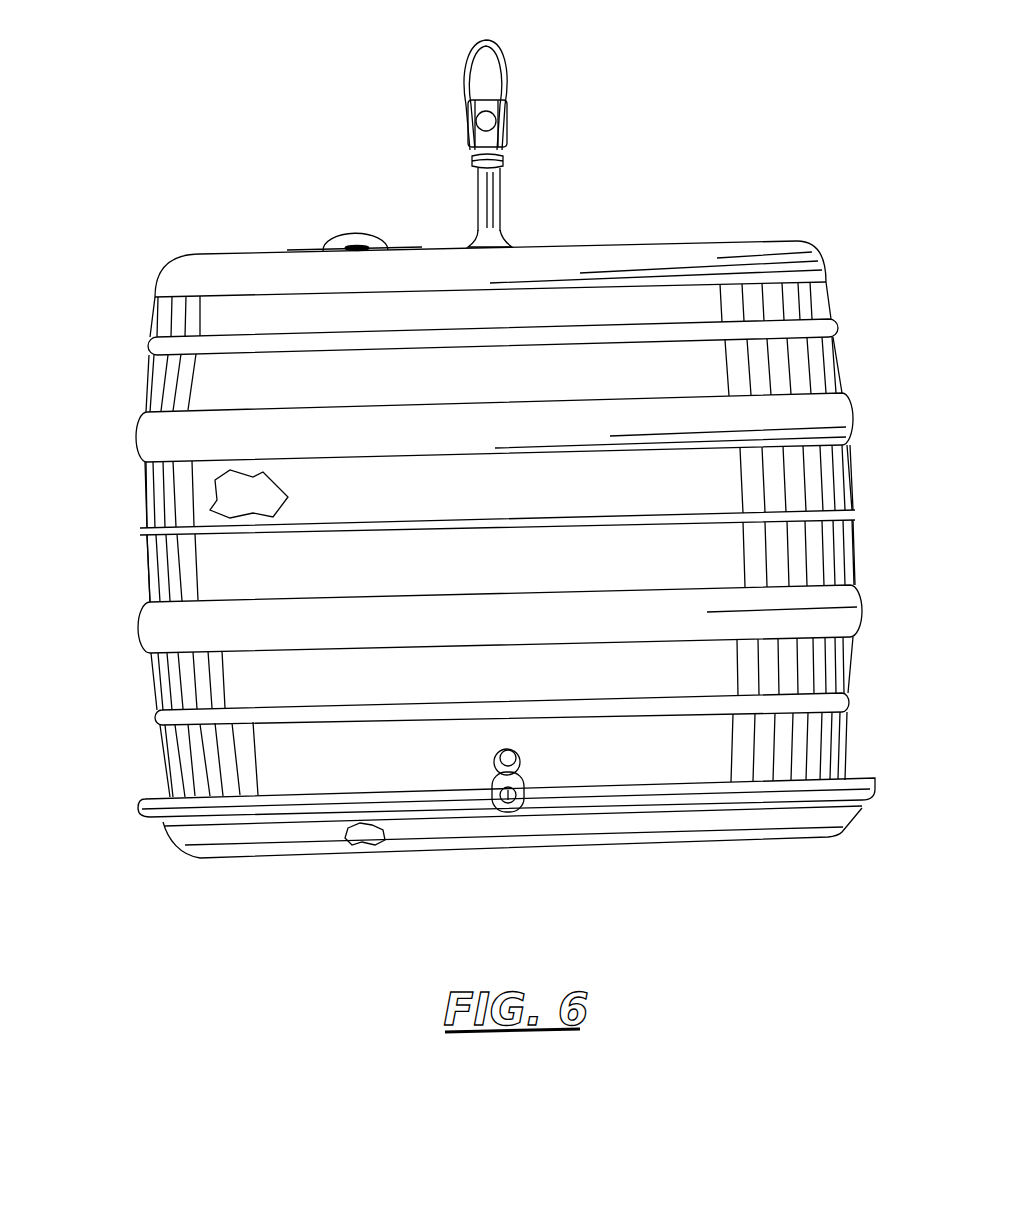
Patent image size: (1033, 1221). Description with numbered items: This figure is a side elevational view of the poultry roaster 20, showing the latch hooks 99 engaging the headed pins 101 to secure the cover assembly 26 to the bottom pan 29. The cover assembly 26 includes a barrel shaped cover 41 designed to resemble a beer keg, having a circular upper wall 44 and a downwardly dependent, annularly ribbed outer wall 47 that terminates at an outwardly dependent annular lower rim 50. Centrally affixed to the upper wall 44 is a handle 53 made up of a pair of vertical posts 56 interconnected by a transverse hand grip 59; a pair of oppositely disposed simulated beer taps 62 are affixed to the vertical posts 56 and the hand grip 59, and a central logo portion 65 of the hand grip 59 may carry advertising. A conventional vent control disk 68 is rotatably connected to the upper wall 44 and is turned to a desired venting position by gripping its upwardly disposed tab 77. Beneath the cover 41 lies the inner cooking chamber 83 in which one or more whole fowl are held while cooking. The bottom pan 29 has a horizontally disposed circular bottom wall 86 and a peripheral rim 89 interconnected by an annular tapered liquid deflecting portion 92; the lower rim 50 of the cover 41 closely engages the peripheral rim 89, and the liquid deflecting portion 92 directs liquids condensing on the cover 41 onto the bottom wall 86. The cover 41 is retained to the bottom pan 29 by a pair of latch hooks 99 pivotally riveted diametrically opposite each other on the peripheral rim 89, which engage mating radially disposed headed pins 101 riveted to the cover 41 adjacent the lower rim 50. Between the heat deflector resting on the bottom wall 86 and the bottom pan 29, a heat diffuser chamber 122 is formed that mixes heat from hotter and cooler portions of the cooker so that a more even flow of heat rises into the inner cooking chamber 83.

The poultry roaster 20 is at (848, 233).
The cover assembly 26 is at (147, 322).
The bottom pan 29 is at (396, 860).
The cover 41 is at (820, 300).
The upper wall 44 is at (740, 246).
The outer wall 47 is at (218, 566).
The lower rim 50 is at (717, 787).
The handle 53 is at (516, 52).
The vertical posts 56 is at (496, 194).
The hand grip 59 is at (516, 117).
The simulated beer taps 62 is at (478, 84).
The central logo portion 65 is at (477, 126).
The vent control disk 68 is at (297, 250).
The tab 77 is at (352, 240).
The inner cooking chamber 83 is at (252, 500).
The bottom wall 86 is at (713, 848).
The peripheral rim 89 is at (160, 816).
The liquid deflecting portion 92 is at (293, 841).
The latch hooks 99 is at (507, 806).
The headed pins 101 is at (500, 765).
The heat diffuser chamber 122 is at (356, 850).